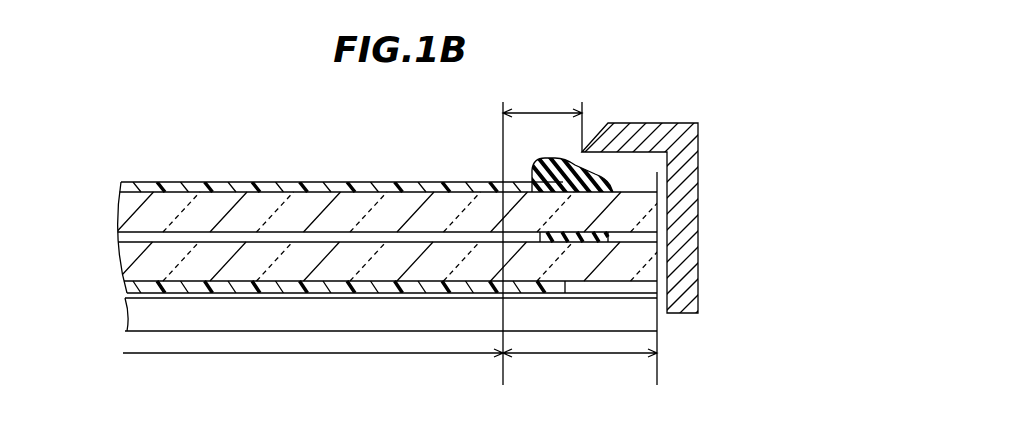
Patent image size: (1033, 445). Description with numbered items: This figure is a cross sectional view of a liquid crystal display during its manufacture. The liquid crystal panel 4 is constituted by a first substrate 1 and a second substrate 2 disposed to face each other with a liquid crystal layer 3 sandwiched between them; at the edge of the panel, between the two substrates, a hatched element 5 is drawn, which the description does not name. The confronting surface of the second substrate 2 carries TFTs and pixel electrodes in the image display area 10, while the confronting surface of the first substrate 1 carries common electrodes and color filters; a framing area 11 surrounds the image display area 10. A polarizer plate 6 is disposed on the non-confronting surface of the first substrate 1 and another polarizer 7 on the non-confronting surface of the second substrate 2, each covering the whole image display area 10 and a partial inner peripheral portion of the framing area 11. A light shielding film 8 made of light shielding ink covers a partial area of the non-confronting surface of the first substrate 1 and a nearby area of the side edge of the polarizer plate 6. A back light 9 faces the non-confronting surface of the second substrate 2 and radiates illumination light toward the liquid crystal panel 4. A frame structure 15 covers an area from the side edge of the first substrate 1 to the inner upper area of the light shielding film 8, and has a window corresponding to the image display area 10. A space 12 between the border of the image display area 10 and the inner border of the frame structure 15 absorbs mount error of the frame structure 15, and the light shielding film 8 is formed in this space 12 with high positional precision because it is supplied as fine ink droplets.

The first substrate 1 is at (118, 214).
The second substrate 2 is at (123, 274).
The liquid crystal layer 3 is at (119, 241).
The liquid crystal panel 4 is at (65, 198).
The sealing material 5 is at (610, 236).
The polarizer plate 6 is at (120, 185).
The polarizer 7 is at (123, 293).
The light shielding film 8 is at (542, 157).
The back light 9 is at (127, 316).
The image display area 10 is at (318, 355).
The framing area 11 is at (578, 355).
The space 12 is at (542, 235).
The frame structure 15 is at (627, 123).